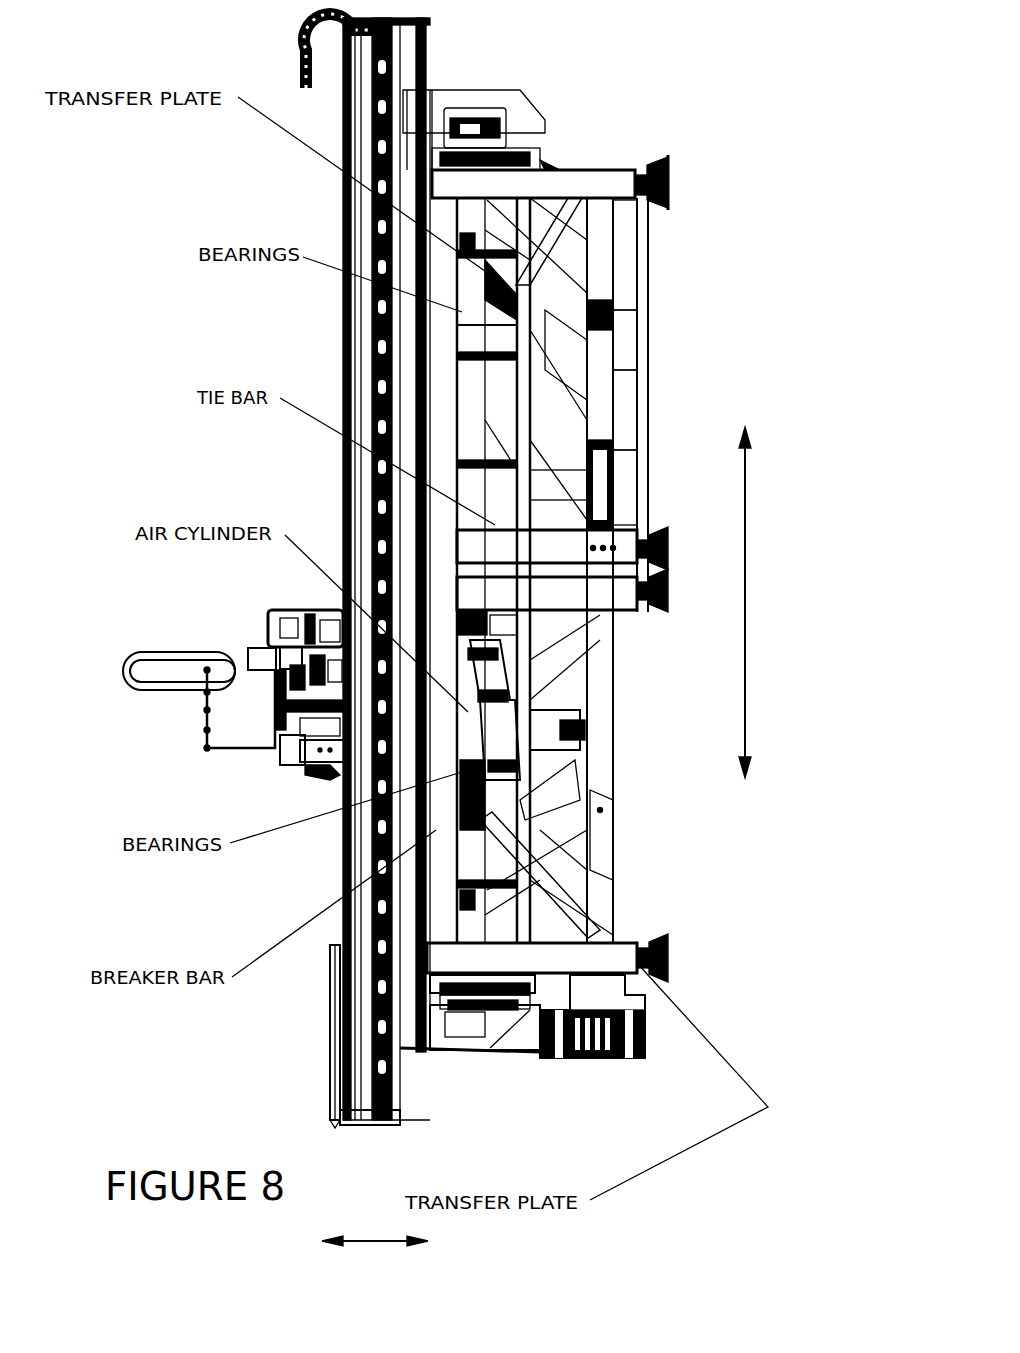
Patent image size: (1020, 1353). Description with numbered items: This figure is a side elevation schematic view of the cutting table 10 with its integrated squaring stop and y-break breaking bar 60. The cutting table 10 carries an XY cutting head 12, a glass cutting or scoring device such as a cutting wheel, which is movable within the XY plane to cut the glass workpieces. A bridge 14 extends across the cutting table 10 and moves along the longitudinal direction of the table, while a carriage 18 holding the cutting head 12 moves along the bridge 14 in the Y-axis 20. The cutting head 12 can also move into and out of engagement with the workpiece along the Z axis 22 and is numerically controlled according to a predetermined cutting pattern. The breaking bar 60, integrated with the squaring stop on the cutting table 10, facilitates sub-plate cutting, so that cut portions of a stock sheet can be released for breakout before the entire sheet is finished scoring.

The cutting table 10 is at (612, 46).
The XY cutting head 12 is at (290, 667).
The bridge 14 is at (340, 117).
The carriage 18 is at (270, 625).
The Y-axis 20 is at (748, 537).
The Z axis 22 is at (377, 1246).
The breaking bar 60 is at (338, 855).